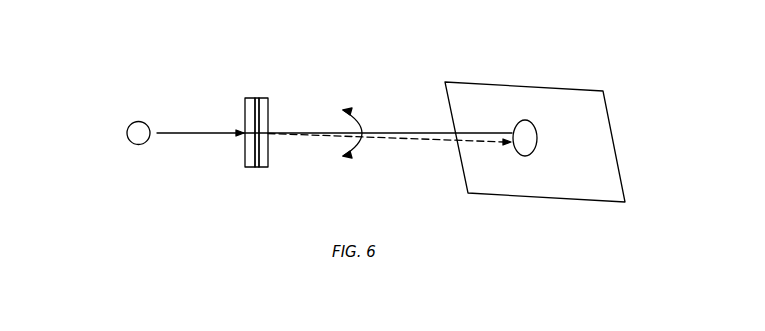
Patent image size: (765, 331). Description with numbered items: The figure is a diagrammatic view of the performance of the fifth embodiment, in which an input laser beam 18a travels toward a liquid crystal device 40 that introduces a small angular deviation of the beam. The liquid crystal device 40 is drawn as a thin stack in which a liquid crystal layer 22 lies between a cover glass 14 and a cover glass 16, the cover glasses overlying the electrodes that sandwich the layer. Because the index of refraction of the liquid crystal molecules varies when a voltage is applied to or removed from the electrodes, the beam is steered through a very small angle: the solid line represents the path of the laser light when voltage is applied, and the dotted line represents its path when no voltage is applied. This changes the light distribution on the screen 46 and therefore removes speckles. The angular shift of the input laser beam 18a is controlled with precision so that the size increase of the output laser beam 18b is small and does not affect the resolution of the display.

The input laser beam 18a is at (127, 128).
The output laser beam 18b is at (528, 156).
The cover glass 14 is at (245, 155).
The liquid crystal layer 22 is at (257, 98).
The cover glass 16 is at (268, 155).
The liquid crystal device 40 is at (260, 122).
The screen 46 is at (594, 134).